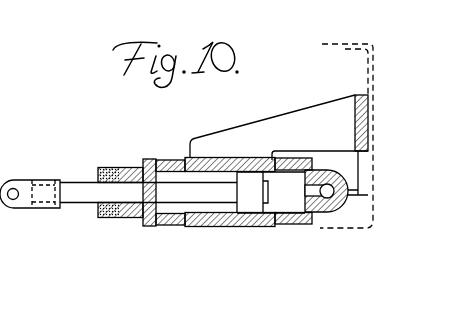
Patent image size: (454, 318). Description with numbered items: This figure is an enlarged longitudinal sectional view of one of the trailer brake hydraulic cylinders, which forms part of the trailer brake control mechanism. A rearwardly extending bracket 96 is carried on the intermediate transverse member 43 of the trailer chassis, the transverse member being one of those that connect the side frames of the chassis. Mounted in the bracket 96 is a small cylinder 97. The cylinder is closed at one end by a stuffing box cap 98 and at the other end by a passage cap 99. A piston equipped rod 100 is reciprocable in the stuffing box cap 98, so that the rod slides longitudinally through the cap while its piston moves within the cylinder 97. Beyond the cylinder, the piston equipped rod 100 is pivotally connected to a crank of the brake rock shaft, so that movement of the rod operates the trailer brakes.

The intermediate transverse member 43 is at (375, 63).
The bracket 96 is at (285, 124).
The small cylinder 97 is at (215, 212).
The stuffing box cap 98 is at (167, 160).
The passage cap 99 is at (310, 174).
The piston equipped rod 100 is at (77, 190).